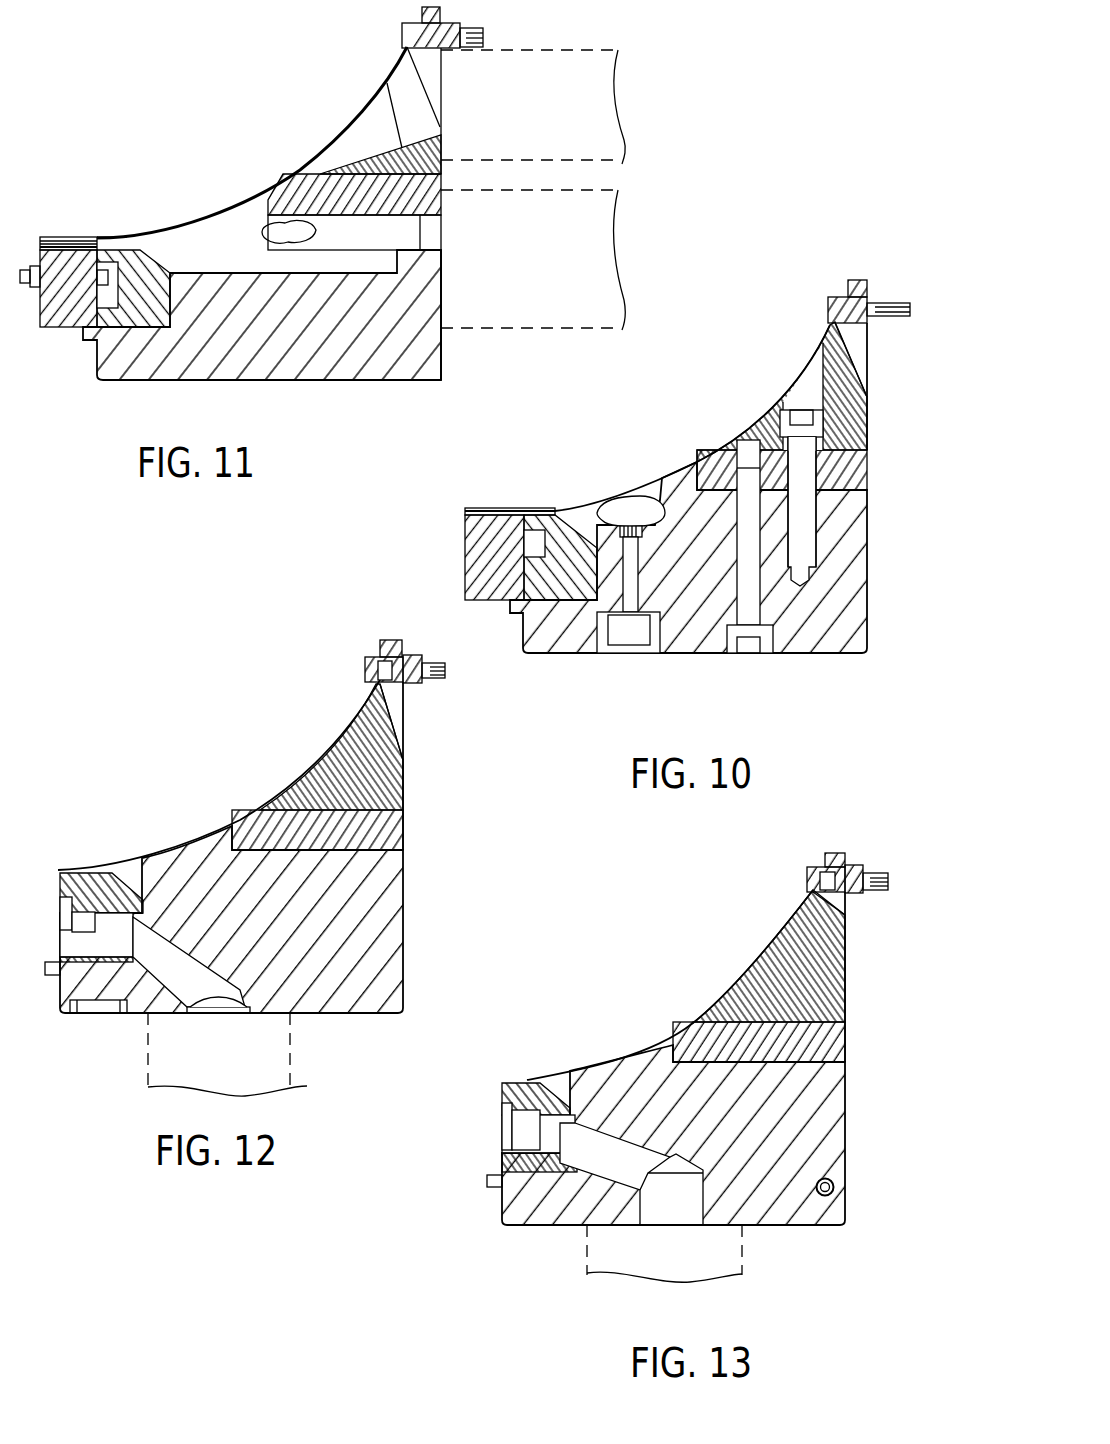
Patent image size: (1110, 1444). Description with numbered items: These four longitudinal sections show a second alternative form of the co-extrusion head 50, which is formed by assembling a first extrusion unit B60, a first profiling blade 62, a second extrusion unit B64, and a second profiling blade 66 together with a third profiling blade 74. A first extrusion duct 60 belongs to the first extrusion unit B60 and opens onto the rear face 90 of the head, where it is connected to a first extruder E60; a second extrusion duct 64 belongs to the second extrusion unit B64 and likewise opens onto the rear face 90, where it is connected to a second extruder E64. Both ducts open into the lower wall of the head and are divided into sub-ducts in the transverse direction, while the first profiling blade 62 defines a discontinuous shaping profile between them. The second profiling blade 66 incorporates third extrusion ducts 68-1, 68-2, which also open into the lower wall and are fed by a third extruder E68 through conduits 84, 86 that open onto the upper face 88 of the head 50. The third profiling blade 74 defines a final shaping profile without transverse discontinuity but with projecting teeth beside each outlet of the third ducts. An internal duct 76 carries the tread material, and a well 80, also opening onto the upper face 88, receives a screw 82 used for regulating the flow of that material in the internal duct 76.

In FIG. 11, the co-extrusion head 50 is at (316, 397).
In FIG. 10, the co-extrusion head 50 is at (813, 670).
In FIG. 12, the co-extrusion head 50 is at (316, 1032).
In FIG. 13, the co-extrusion head 50 is at (768, 1248).
In FIG. 11, the first extrusion duct 60 is at (372, 100).
In FIG. 11, the first extrusion unit B60 is at (333, 167).
In FIG. 11, the first profiling blade 62 is at (303, 195).
In FIG. 11, the second extrusion duct 64 is at (224, 240).
In FIG. 11, the second extrusion unit B64 is at (430, 375).
In FIG. 12, the second extrusion unit B64 is at (395, 931).
In FIG. 13, the second extrusion unit B64 is at (810, 1117).
In FIG. 11, the second profiling blade 66 is at (135, 270).
In FIG. 12, the second profiling blade 66 is at (85, 878).
In FIG. 13, the second profiling blade 66 is at (520, 1083).
In FIG. 13, the third extrusion duct 68-1 is at (523, 1137).
In FIG. 12, the third extrusion duct 68-2 is at (82, 925).
In FIG. 11, the third profiling blade 74 is at (67, 263).
In FIG. 10, the internal duct 76 is at (630, 510).
In FIG. 10, the well 80 is at (640, 578).
In FIG. 10, the screw 82 is at (627, 630).
In FIG. 13, the conduit 84 is at (610, 1147).
In FIG. 12, the conduit 86 is at (183, 960).
In FIG. 12, the upper face 88 is at (383, 1015).
In FIG. 13, the upper face 88 is at (830, 1227).
In FIG. 11, the rear face 90 is at (441, 348).
In FIG. 11, the first extruder E60 is at (583, 75).
In FIG. 11, the second extruder E64 is at (583, 240).
In FIG. 12, the third extruder E68 is at (173, 1060).
In FIG. 13, the third extruder E68 is at (607, 1255).